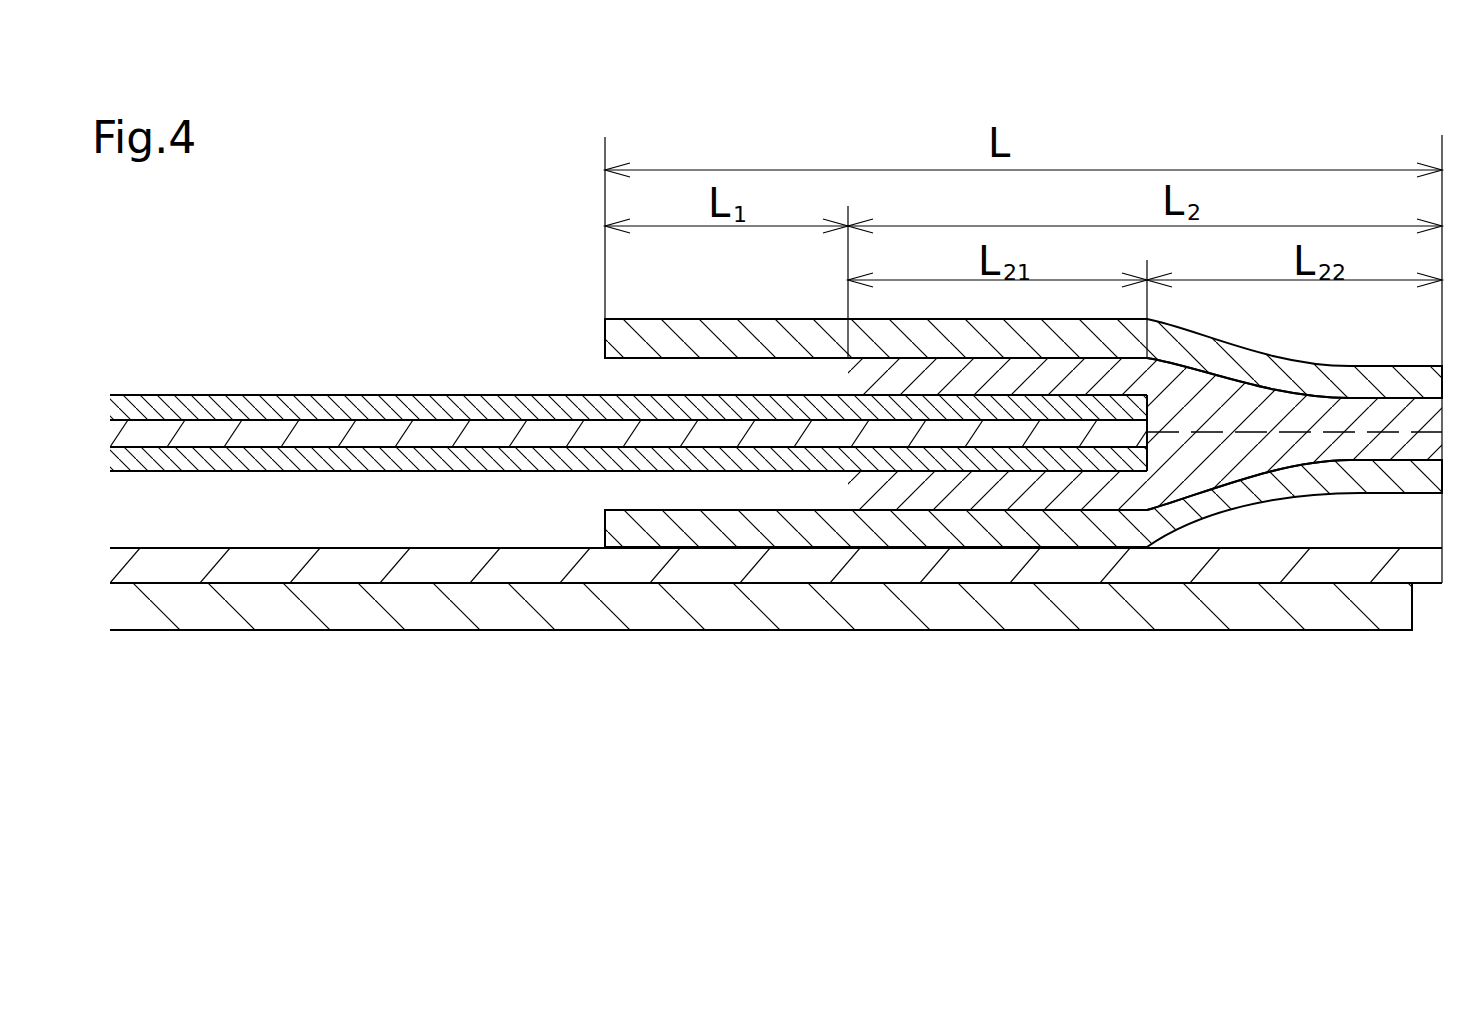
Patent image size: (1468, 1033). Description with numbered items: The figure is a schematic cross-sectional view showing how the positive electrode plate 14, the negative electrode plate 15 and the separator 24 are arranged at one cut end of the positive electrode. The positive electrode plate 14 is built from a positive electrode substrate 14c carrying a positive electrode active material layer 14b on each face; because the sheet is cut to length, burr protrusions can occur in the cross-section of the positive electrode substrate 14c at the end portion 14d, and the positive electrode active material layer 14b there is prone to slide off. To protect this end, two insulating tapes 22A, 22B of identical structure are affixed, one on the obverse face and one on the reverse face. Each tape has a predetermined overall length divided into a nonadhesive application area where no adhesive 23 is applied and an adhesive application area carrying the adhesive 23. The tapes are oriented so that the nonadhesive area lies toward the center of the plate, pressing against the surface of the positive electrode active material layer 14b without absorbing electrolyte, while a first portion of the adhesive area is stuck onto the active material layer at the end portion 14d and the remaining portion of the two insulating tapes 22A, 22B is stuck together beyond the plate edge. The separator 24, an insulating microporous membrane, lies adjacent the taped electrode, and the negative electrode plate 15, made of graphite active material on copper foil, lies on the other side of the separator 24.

The positive electrode plate 14 is at (617, 488).
The positive electrode active material layer 14b is at (400, 410).
The positive electrode substrate 14c is at (188, 432).
The end portion 14d is at (1122, 472).
The negative electrode plate 15 is at (470, 600).
The insulating tape 22A is at (653, 317).
The insulating tape 22B is at (673, 530).
The adhesive 23 is at (1100, 375).
The separator 24 is at (250, 568).